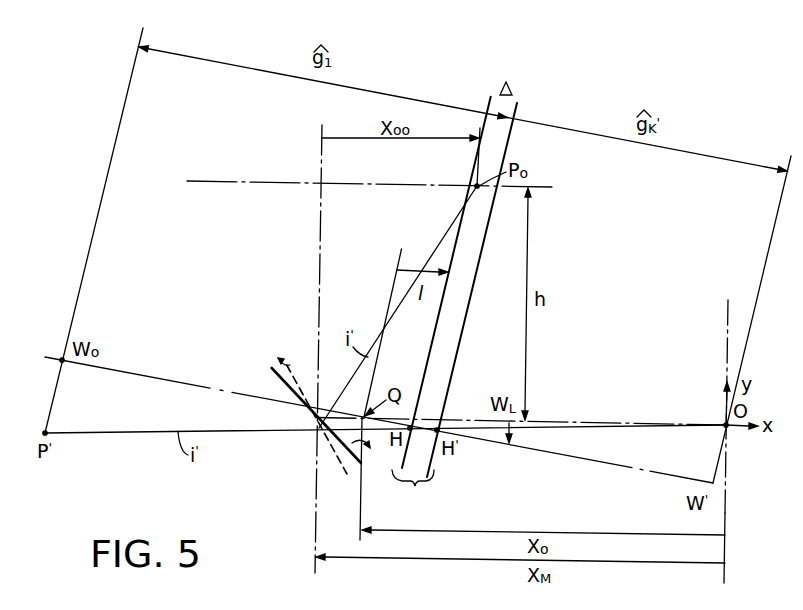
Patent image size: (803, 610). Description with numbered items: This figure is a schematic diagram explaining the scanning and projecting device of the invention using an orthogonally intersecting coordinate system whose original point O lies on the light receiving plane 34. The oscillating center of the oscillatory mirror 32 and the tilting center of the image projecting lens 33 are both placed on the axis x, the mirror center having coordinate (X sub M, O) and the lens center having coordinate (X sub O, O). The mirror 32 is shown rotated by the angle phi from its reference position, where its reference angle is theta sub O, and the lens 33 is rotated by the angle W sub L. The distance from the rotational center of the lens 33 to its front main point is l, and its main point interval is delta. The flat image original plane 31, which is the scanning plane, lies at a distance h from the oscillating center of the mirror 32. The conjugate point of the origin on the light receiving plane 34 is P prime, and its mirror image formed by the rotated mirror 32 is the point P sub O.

The flat image original plane 31 is at (216, 181).
The rotatory mirror 32 is at (343, 463).
The image projecting lens 33 is at (454, 306).
The light receiving plane 34 is at (728, 313).